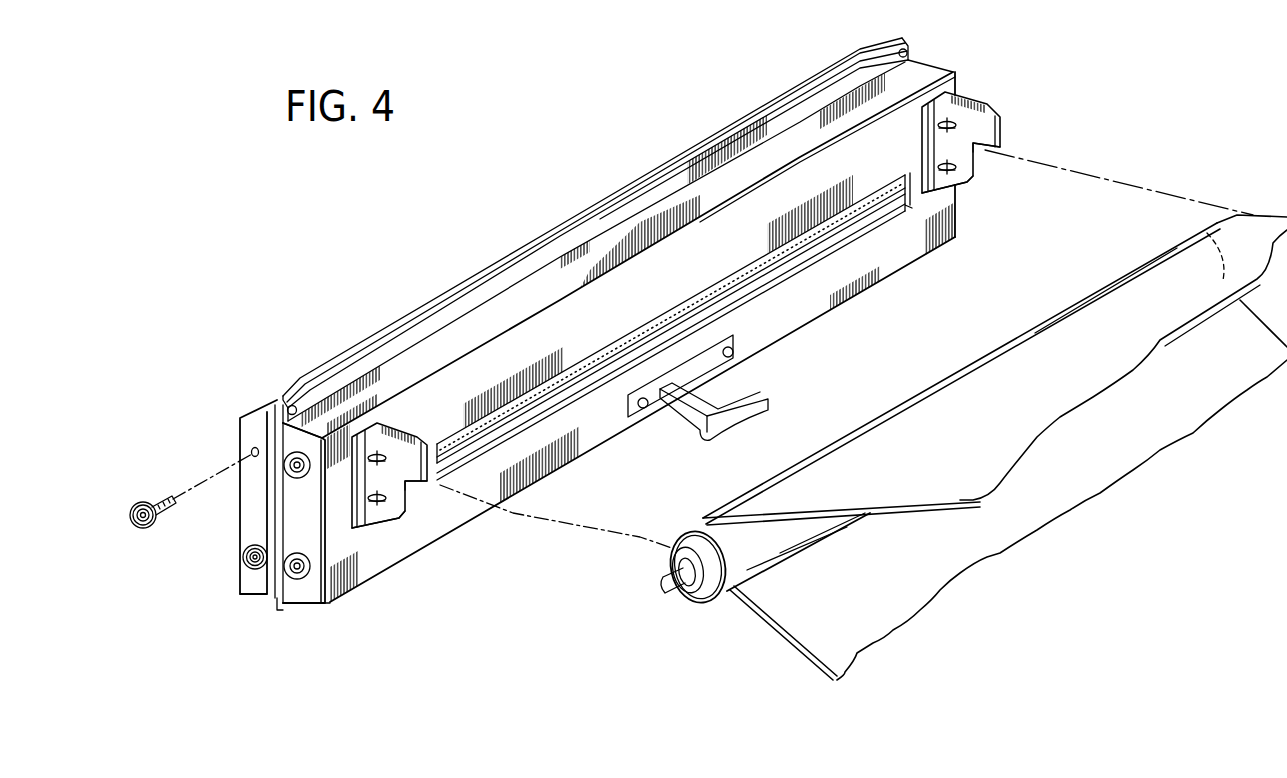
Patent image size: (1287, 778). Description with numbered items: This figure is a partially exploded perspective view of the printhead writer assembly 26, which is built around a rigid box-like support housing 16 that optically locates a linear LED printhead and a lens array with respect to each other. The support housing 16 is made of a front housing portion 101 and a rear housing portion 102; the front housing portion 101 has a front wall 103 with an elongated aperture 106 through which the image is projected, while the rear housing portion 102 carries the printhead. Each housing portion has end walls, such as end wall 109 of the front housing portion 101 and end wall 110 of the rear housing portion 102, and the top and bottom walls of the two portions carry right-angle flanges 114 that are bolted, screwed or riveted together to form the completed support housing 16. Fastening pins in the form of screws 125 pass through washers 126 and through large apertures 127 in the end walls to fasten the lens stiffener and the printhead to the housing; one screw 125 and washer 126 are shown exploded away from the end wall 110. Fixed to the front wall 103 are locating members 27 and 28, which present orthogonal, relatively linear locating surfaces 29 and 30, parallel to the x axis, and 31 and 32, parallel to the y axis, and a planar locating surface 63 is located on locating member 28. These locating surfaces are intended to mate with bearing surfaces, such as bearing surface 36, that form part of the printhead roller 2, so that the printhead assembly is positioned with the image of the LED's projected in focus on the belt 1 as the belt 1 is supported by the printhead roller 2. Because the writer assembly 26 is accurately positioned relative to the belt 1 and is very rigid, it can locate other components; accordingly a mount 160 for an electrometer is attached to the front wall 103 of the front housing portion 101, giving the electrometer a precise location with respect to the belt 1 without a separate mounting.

The belt 1 is at (937, 580).
The printhead roller 2 is at (698, 530).
The rigid box-like support housing 16 is at (372, 563).
The printhead writer assembly 26 is at (255, 389).
The locating member 27 is at (407, 436).
The locating member 28 is at (1000, 118).
The locating surface 29 is at (419, 490).
The locating surface 30 is at (988, 149).
The locating surface 31 is at (407, 509).
The locating surface 32 is at (978, 176).
The bearing surface 36 is at (710, 597).
The planar locating surface 63 is at (977, 133).
The front housing portion 101 is at (309, 602).
The rear housing portion 102 is at (262, 583).
The front wall 103 is at (395, 550).
The elongated aperture 106 is at (583, 381).
The end wall 109 is at (330, 594).
The end wall 110 is at (248, 488).
The right-angle flange 114 is at (353, 376).
The screw 125 is at (170, 500).
The washer 126 is at (145, 528).
The large aperture 127 is at (251, 452).
The mount for an electrometer 160 is at (747, 394).